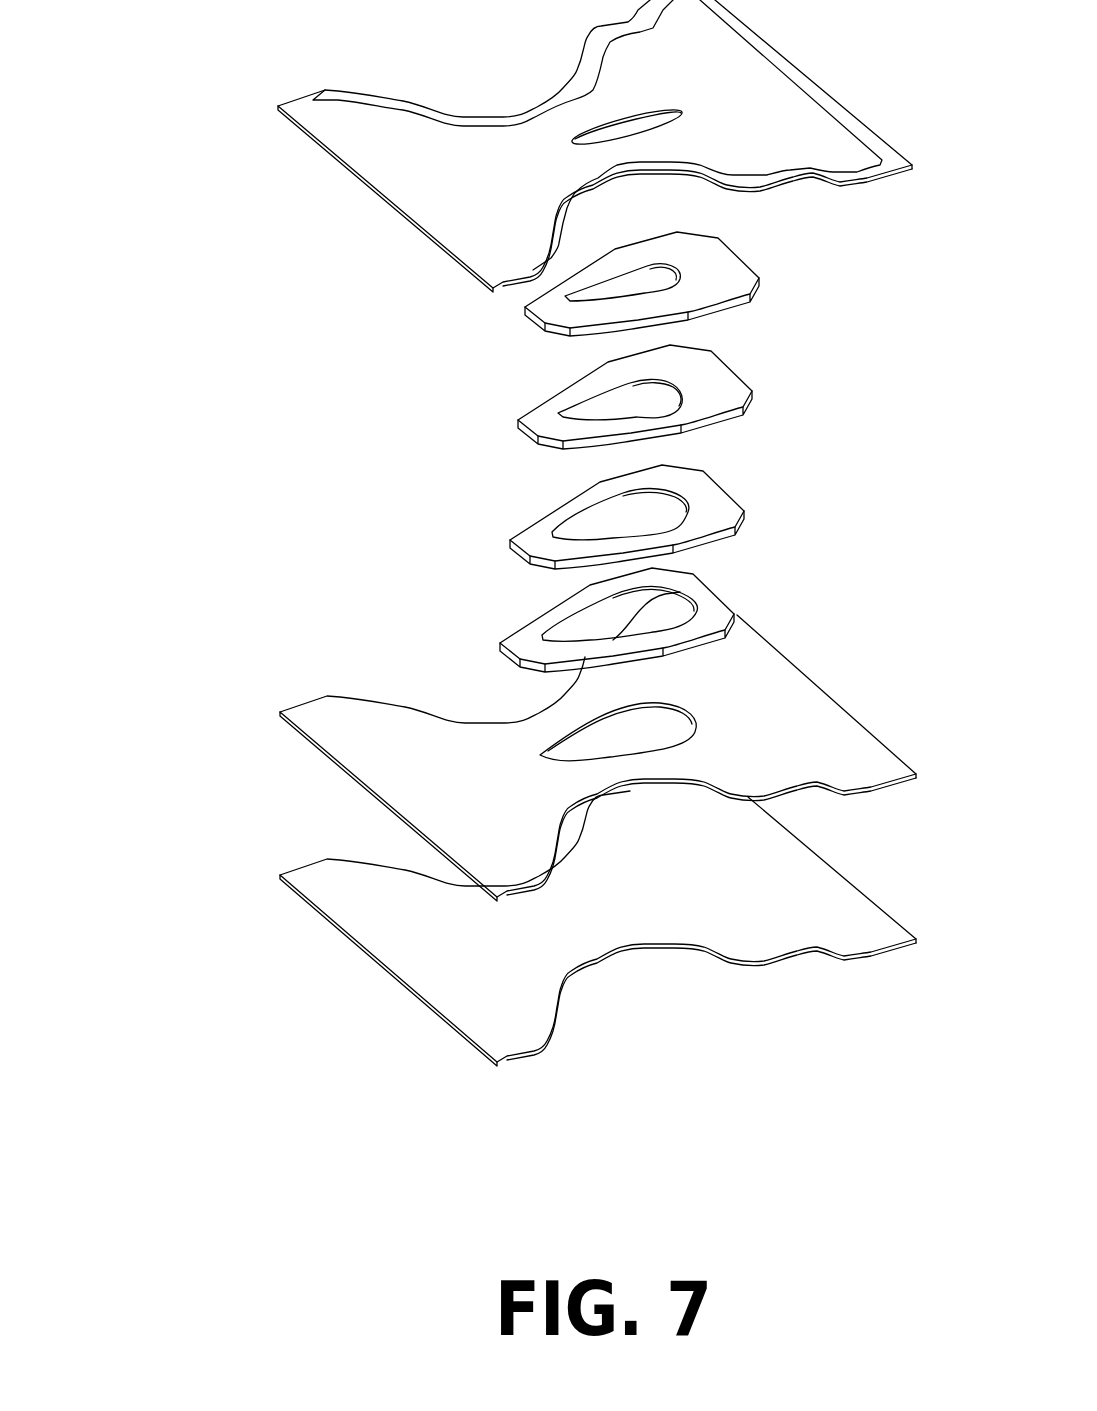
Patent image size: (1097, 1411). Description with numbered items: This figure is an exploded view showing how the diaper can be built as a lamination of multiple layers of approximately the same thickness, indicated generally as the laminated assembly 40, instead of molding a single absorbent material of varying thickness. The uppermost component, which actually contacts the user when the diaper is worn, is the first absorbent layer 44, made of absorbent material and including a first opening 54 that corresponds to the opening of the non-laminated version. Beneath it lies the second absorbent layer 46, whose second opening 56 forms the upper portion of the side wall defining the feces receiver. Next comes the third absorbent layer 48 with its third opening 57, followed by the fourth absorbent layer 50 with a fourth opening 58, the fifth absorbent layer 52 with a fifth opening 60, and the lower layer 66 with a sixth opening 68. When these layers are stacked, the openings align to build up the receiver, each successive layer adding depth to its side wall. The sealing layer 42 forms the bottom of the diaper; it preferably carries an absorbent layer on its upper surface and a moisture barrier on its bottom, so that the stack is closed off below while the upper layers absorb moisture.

The laminated plate assembly 40 is at (215, 841).
The sealing layer 42 is at (452, 965).
The first absorbent layer 44 is at (390, 148).
The second absorbent layer 46 is at (640, 297).
The third absorbent layer 48 is at (640, 402).
The fourth absorbent layer 50 is at (640, 510).
The fifth absorbent layer 52 is at (640, 607).
The first opening 54 is at (598, 123).
The second opening 56 is at (640, 297).
The third opening 57 is at (640, 402).
The fourth opening 58 is at (640, 510).
The fifth opening 60 is at (640, 607).
The lower layer 66 is at (488, 780).
The sixth opening 68 is at (693, 718).